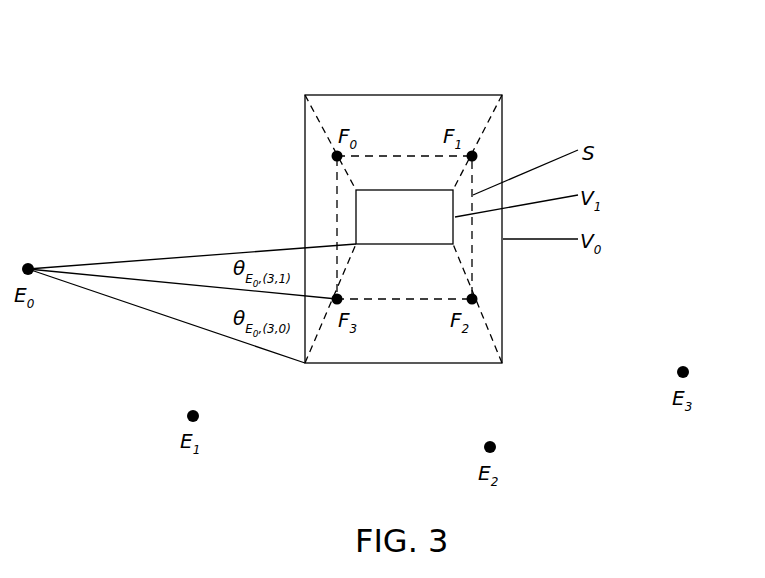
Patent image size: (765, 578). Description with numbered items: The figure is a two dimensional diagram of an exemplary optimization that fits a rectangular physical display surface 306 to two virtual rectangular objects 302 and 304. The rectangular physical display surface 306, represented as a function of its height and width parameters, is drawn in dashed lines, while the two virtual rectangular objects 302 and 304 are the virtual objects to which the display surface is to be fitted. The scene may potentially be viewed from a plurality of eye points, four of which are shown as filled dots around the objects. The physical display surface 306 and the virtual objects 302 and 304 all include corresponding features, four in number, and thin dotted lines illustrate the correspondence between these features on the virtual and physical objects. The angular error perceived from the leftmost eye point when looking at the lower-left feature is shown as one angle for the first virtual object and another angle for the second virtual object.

The virtual rectangular object 302 is at (425, 95).
The virtual rectangular object 304 is at (355, 218).
The rectangular physical display surface 306 is at (405, 299).